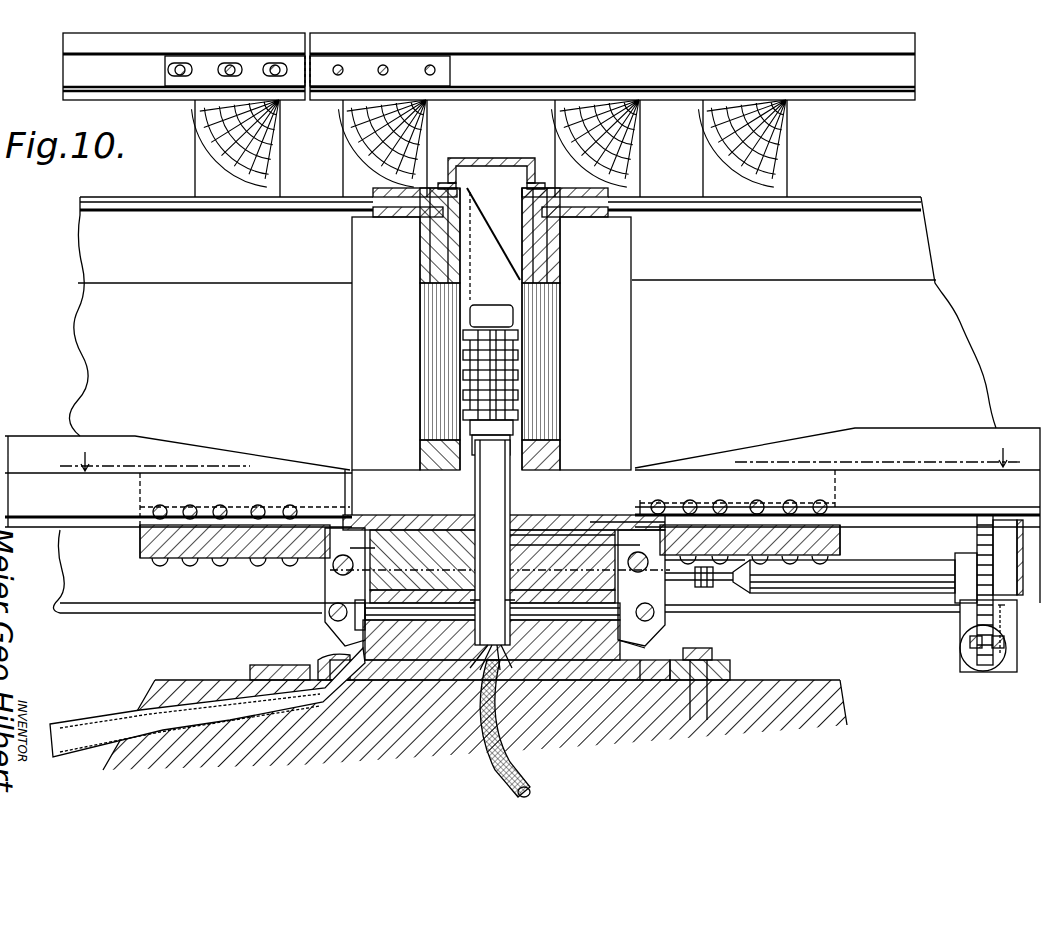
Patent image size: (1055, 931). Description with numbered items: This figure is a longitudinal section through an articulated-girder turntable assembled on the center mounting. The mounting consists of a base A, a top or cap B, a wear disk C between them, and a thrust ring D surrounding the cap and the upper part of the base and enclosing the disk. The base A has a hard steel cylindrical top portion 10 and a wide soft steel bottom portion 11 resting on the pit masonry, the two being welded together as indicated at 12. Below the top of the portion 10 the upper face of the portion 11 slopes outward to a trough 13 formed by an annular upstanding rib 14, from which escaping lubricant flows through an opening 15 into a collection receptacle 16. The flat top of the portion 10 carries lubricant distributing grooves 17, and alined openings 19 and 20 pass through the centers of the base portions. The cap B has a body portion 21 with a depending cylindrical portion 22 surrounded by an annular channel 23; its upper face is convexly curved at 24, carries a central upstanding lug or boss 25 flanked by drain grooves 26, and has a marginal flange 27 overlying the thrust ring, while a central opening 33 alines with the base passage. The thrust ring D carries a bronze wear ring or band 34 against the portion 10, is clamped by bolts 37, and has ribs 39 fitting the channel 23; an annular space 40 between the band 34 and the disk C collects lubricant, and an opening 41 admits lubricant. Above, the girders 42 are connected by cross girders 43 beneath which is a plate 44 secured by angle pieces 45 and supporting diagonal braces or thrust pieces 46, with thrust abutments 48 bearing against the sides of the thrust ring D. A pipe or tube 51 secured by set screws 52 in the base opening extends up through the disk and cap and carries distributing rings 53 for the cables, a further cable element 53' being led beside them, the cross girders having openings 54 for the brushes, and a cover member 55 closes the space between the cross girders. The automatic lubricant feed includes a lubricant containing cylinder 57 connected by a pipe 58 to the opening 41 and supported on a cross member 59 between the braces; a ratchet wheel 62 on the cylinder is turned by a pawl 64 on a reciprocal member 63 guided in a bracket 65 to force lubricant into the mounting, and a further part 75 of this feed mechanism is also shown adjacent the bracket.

The cylindrical top portion 10 is at (625, 638).
The bottom portion 11 is at (545, 462).
The weld 12 is at (640, 662).
The trough 13 is at (700, 650).
The annular upstanding rib 14 is at (290, 668).
The opening 15 is at (332, 658).
The collection receptacle 16 is at (112, 722).
The lubricant distributing grooves 17 is at (370, 642).
The opening 19 is at (500, 648).
The opening 20 is at (505, 720).
The body portion 21 is at (560, 540).
The cylindrical portion 22 is at (575, 522).
The annular channel 23 is at (348, 478).
The convexly curved upper face 24 is at (420, 540).
The central upstanding lug or boss 25 is at (520, 460).
The drain groove 26 is at (545, 500).
The marginal outwardly directed flange 27 is at (355, 515).
The central opening 33 is at (430, 640).
The wear ring or band 34 is at (358, 622).
The bolts 37 is at (255, 525).
The rib 39 is at (350, 545).
The annular space 40 is at (330, 606).
The opening 41 is at (705, 545).
The girders 42 is at (532, 316).
The cross girders 43 is at (435, 243).
The plate 44 is at (140, 532).
The angle pieces 45 is at (425, 452).
The diagonal braces or thrust pieces 46 is at (178, 481).
The thrust abutments 48 is at (170, 562).
The pipe or tube 51 is at (488, 452).
The set screws 52 is at (320, 690).
The distributing rings 53 is at (536, 370).
The wire 53' is at (472, 686).
The openings 54 is at (430, 310).
The cover member 55 is at (491, 158).
The lubricant containing cylinder 57 is at (870, 566).
The pipe 58 is at (765, 522).
The cross member 59 is at (1020, 522).
The ratchet wheel 62 is at (985, 518).
The reciprocal member 63 is at (970, 640).
The pawl 64 is at (988, 665).
The bracket 65 is at (960, 553).
The gear 75 is at (962, 660).
The base A is at (252, 672).
The top or cap B is at (364, 492).
The wear disk C is at (325, 595).
The thrust ring D is at (676, 561).